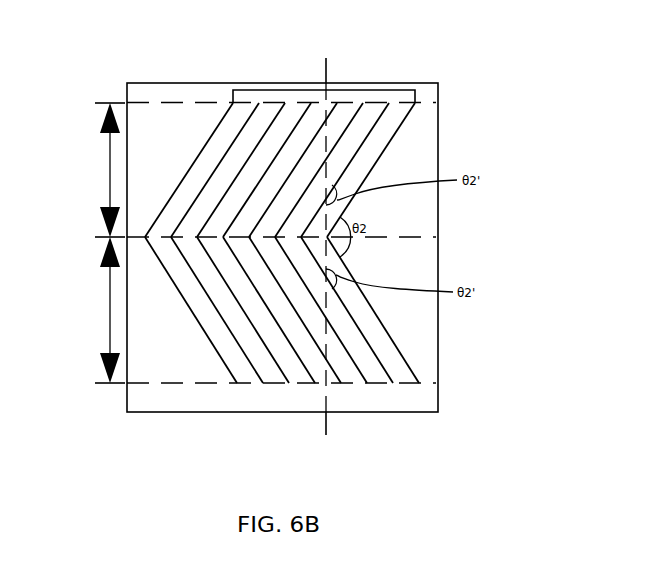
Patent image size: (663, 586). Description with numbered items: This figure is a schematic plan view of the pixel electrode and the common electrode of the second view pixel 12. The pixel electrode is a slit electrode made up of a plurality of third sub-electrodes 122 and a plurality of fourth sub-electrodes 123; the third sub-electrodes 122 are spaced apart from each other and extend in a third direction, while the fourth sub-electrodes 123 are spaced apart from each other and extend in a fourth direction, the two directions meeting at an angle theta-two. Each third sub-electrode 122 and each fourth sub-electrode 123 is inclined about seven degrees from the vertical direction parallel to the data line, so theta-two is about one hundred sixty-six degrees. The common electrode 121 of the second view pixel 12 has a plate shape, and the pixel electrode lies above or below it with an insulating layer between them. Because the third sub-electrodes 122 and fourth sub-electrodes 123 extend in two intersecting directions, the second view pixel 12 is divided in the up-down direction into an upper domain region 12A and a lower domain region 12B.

The second view pixel 12 is at (310, 58).
The upper domain region 12A is at (100, 170).
The lower domain region 12B is at (97, 310).
The common electrode 121 is at (420, 401).
The third sub-electrodes 122 is at (382, 133).
The fourth sub-electrodes 123 is at (378, 340).